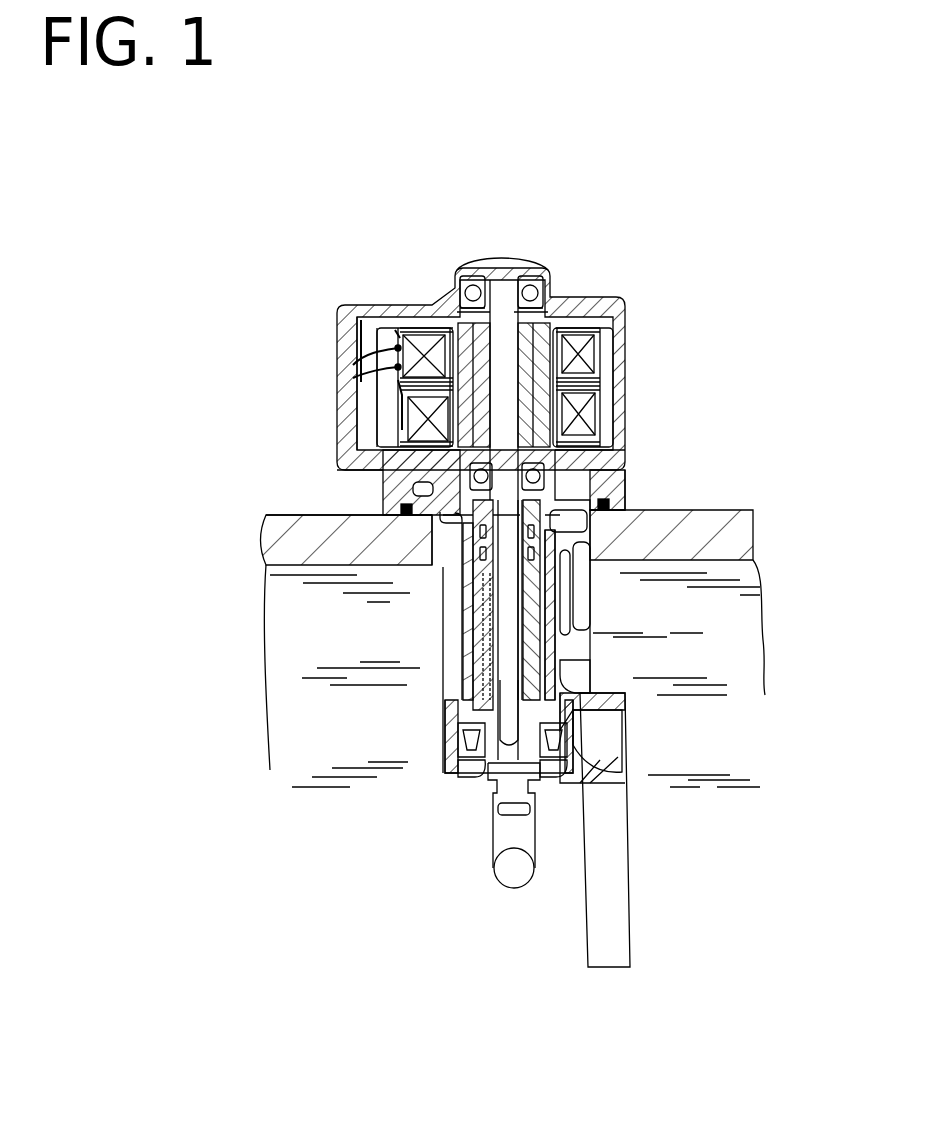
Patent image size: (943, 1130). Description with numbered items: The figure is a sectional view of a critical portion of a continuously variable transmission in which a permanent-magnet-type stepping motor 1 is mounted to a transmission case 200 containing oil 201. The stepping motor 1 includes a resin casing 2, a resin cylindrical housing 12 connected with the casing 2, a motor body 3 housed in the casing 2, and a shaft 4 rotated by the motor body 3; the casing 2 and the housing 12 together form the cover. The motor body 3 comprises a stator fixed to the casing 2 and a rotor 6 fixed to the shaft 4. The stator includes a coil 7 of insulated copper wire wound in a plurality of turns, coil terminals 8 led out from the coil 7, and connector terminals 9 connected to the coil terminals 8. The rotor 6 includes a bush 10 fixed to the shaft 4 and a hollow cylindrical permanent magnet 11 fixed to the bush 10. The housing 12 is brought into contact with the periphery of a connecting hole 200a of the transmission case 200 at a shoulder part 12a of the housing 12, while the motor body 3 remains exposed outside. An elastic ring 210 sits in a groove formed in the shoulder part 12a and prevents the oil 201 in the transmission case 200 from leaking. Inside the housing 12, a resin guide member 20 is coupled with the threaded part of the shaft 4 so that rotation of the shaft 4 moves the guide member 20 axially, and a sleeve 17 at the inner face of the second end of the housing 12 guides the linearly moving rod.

The stepping motor 1 is at (633, 288).
The casing 2 is at (342, 398).
The motor body 3 is at (594, 410).
The shaft 4 is at (522, 300).
The rotor 6 is at (580, 297).
The coil 7 is at (594, 353).
The coil terminals 8 is at (367, 350).
The connector terminals 9 is at (342, 315).
The bush 10 is at (485, 345).
The permanent magnet 11 is at (453, 297).
The housing 12 is at (388, 494).
The shoulder part 12a is at (620, 510).
The sleeve 17 is at (473, 775).
The guide member 20 is at (427, 543).
The transmission case 200 is at (722, 512).
The connecting hole 200a is at (445, 567).
The oil 201 is at (703, 755).
The elastic ring 210 is at (430, 518).